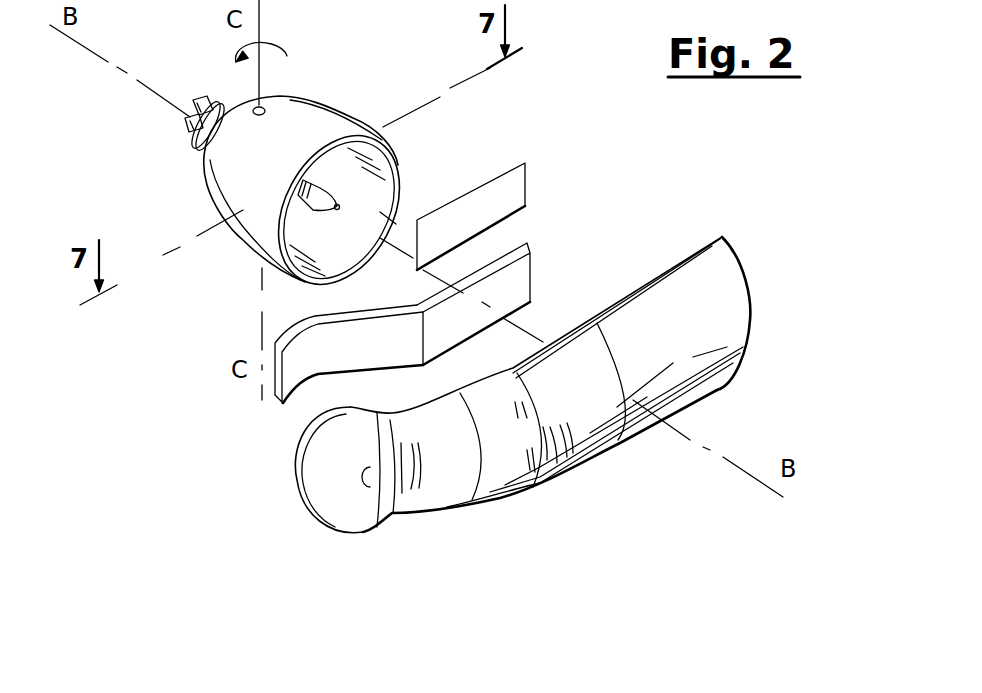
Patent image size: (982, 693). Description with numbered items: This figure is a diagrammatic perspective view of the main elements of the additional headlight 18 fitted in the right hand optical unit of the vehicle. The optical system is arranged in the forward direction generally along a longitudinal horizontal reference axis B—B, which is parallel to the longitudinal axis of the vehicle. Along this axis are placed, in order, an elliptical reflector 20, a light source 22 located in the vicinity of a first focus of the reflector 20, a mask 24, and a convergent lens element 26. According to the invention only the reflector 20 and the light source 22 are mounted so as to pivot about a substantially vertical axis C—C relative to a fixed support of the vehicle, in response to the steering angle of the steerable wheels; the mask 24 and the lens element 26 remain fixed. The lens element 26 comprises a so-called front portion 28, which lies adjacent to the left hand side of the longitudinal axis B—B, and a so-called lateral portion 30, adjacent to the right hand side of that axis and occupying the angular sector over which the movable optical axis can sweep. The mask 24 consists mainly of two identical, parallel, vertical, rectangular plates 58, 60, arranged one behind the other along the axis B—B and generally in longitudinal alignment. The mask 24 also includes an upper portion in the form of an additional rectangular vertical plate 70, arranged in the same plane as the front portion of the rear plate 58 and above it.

The additional headlight 18 is at (584, 128).
The elliptical reflector 20 is at (357, 115).
The light source 22 is at (340, 203).
The mask 24 is at (410, 321).
The convergent lens element 26 is at (557, 387).
The front portion 28 is at (717, 390).
The lateral portion 30 is at (452, 521).
The rear plate 58 is at (292, 329).
The plate 60 is at (287, 403).
The additional rectangular vertical plate 70 is at (500, 194).